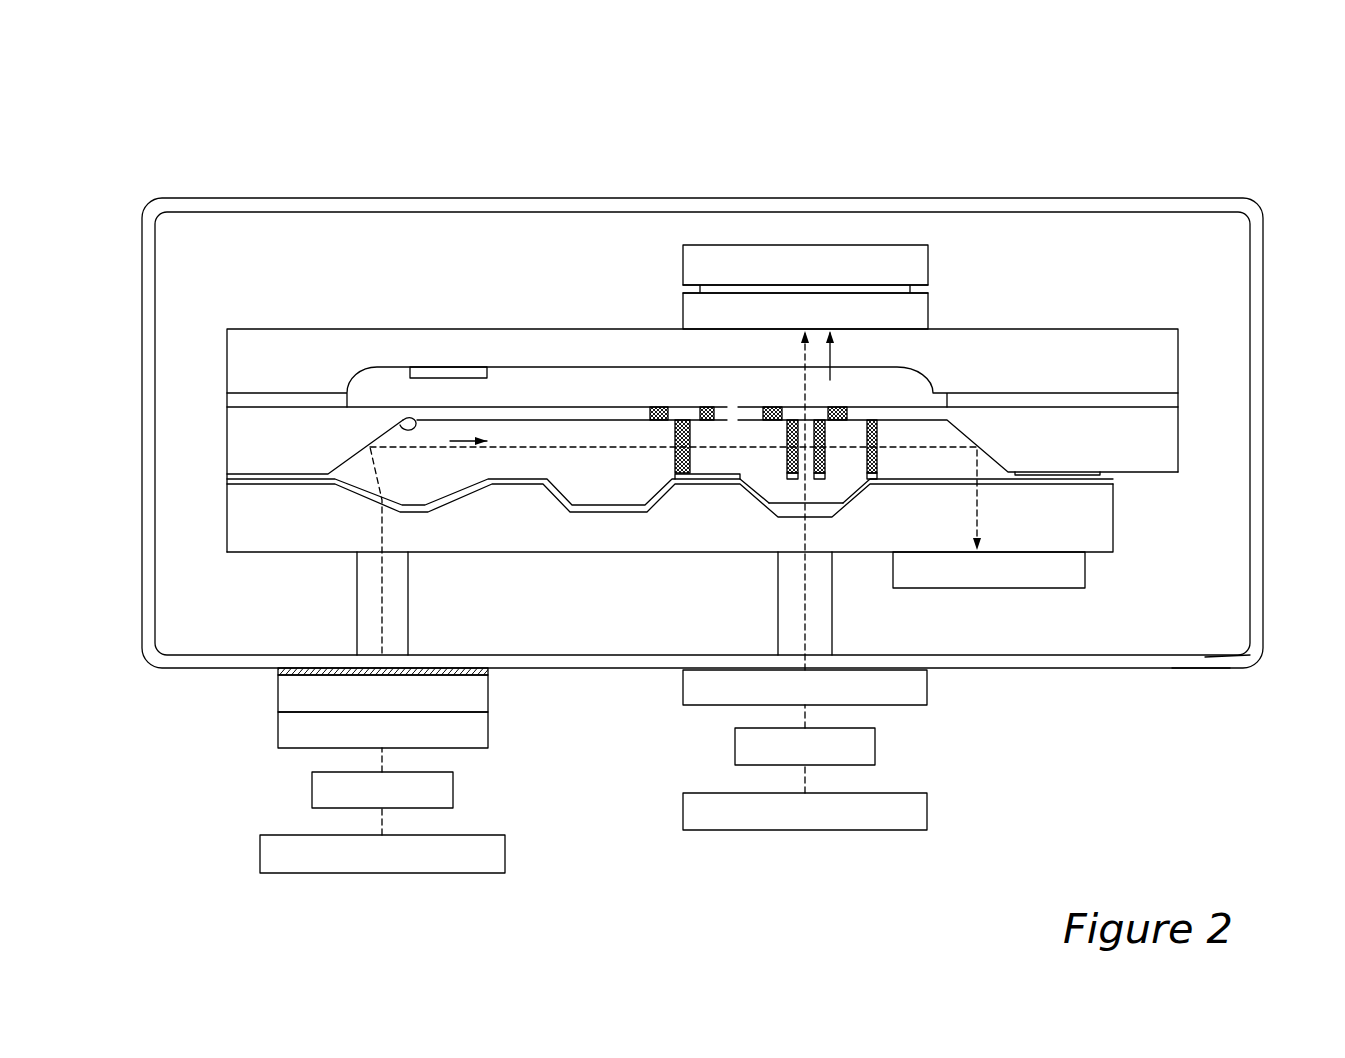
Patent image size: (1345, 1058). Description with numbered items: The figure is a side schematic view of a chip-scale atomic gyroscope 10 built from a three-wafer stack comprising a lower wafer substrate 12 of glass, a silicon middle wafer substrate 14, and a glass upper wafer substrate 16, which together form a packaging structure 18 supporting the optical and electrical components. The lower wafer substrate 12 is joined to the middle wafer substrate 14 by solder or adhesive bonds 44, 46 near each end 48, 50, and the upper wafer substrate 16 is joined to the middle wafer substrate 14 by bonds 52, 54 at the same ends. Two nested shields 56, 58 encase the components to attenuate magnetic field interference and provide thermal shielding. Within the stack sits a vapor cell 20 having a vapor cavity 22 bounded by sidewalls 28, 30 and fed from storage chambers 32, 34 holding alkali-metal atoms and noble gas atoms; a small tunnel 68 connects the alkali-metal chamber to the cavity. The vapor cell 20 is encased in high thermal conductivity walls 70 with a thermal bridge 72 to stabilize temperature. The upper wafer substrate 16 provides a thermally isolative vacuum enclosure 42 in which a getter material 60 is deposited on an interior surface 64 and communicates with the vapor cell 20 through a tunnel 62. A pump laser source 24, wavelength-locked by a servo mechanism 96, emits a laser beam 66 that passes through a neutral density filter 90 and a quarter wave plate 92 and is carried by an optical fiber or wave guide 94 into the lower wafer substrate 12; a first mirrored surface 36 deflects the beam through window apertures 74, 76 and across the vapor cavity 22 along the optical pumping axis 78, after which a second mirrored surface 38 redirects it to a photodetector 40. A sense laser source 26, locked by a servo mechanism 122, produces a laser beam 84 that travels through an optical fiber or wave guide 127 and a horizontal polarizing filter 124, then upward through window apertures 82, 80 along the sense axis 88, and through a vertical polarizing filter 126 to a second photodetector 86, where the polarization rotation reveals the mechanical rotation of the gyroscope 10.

The chip-scale atomic gyroscope 10 is at (709, 427).
The lower wafer substrate 12 is at (242, 518).
The middle wafer substrate 14 is at (242, 446).
The upper wafer substrate 16 is at (243, 362).
The packaging structure 18 is at (901, 246).
The vapor cell 20 is at (743, 493).
The vapor cavity 22 is at (812, 447).
The pump laser source 24 is at (312, 788).
The sense laser source 26 is at (875, 745).
The sidewall 28 is at (787, 437).
The sidewall 30 is at (845, 418).
The storage chamber 32 is at (1172, 668).
The storage chamber 34 is at (1205, 657).
The first mirrored surface 36 is at (413, 423).
The second mirrored surface 38 is at (982, 461).
The photodetector 40 is at (1085, 572).
The vacuum enclosure 42 is at (540, 377).
The bond 44 is at (237, 475).
The bond 46 is at (1103, 475).
The end 48 is at (215, 423).
The end 50 is at (1190, 437).
The bond 52 is at (233, 402).
The bond 54 is at (1160, 400).
The shield 56 is at (202, 210).
The shield 58 is at (247, 198).
The getter material 60 is at (477, 377).
The tunnel 62 is at (733, 412).
The interior surface 64 is at (561, 374).
The laser beam 66 is at (382, 613).
The tunnel 68 is at (787, 470).
The wall 70 is at (675, 466).
The thermal bridge 72 is at (797, 495).
The window aperture 74 is at (675, 436).
The window aperture 76 is at (873, 430).
The optical pumping axis 78 is at (462, 443).
The window aperture 80 is at (817, 412).
The window aperture 82 is at (832, 507).
The laser beam 84 is at (807, 573).
The second photodetector 86 is at (903, 245).
The sense axis 88 is at (830, 362).
The neutral density filter 90 is at (278, 730).
The quarter wave plate 92 is at (278, 693).
The optical fiber or wave guide 94 is at (357, 580).
The servo mechanism 96 is at (383, 873).
The servo mechanism 122 is at (927, 806).
The horizontal polarizing filter 124 is at (927, 687).
The vertical polarizing filter 126 is at (927, 310).
The optical fiber or wave guide 127 is at (832, 630).